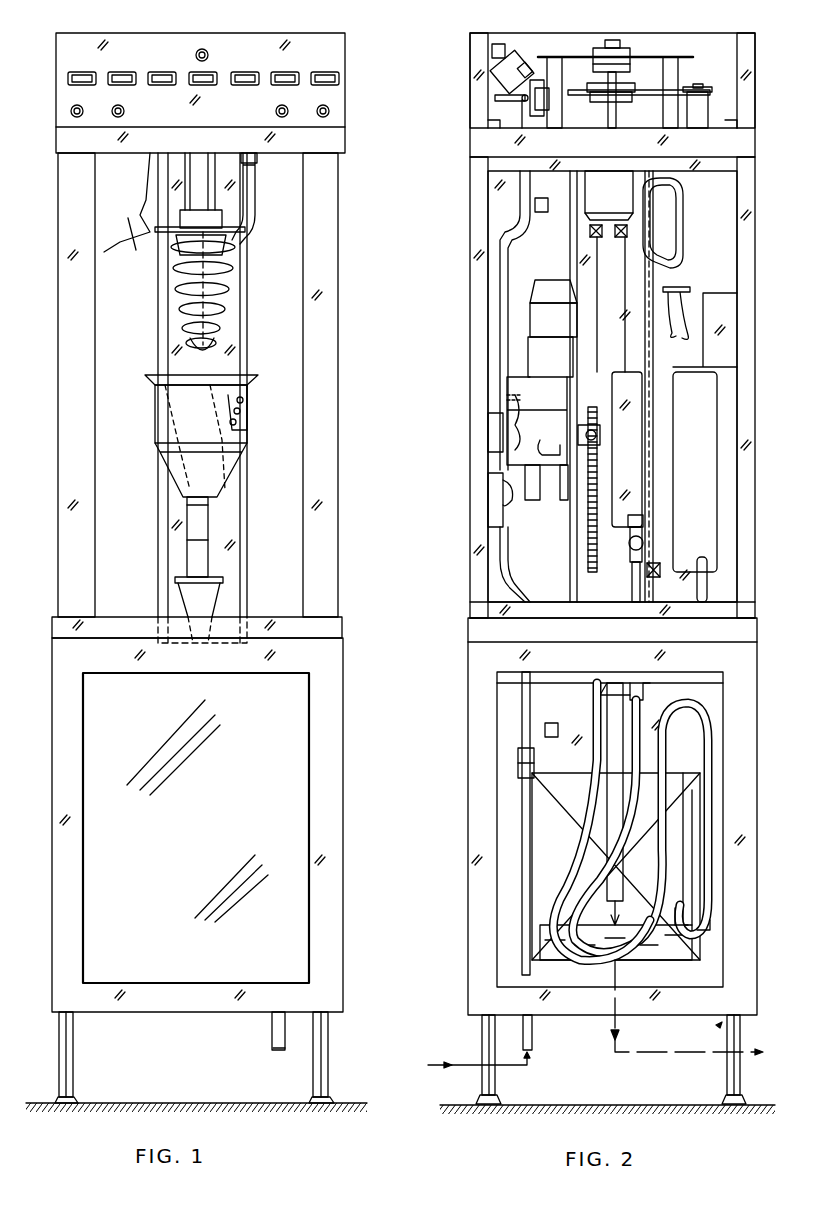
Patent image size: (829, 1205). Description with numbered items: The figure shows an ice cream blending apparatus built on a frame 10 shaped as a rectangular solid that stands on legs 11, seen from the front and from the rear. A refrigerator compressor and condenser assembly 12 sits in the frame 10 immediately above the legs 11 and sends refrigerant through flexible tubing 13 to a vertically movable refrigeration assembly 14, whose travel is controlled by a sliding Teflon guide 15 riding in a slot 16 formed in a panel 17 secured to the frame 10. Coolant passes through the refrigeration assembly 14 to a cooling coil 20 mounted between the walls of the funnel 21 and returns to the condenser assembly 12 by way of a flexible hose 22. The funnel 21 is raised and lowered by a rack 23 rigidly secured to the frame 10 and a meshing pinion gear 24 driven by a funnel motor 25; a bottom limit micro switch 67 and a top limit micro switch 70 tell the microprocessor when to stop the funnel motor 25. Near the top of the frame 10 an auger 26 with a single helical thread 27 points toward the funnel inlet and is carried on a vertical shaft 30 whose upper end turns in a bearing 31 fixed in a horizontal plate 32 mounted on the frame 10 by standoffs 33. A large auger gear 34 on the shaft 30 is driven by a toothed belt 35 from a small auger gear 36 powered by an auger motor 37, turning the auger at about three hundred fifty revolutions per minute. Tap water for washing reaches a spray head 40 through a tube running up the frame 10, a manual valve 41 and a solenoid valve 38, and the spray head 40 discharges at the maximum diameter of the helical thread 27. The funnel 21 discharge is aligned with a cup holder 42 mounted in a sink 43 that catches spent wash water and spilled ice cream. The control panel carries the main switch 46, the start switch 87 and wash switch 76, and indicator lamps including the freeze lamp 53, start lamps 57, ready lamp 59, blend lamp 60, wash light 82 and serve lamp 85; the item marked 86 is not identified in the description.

In FIG. 1, the frame 10 is at (322, 372).
In FIG. 1, the legs 11 is at (328, 1052).
In FIG. 2, the legs 11 is at (730, 1068).
In FIG. 1, the refrigerator compressor and condenser assembly 12 is at (276, 838).
In FIG. 2, the refrigerator compressor and condenser assembly 12 is at (644, 797).
In FIG. 2, the flexible tubing 13 is at (640, 710).
In FIG. 2, the refrigeration assembly 14 is at (632, 382).
In FIG. 2, the sliding Teflon guide 15 is at (610, 267).
In FIG. 1, the slot 16 is at (213, 528).
In FIG. 1, the panel 17 is at (300, 262).
In FIG. 1, the cooling coil 20 is at (237, 422).
In FIG. 1, the funnel 21 is at (155, 418).
In FIG. 2, the flexible hose 22 is at (607, 706).
In FIG. 2, the rack 23 is at (597, 477).
In FIG. 2, the pinion gear 24 is at (600, 432).
In FIG. 2, the funnel motor 25 is at (540, 322).
In FIG. 1, the auger 26 is at (198, 318).
In FIG. 1, the helical thread 27 is at (195, 288).
In FIG. 2, the vertical shaft 30 is at (606, 112).
In FIG. 2, the bearing 31 is at (604, 48).
In FIG. 2, the plate 32 is at (578, 57).
In FIG. 2, the standoffs 33 is at (548, 108).
In FIG. 2, the large auger gear 34 is at (648, 90).
In FIG. 2, the toothed belt 35 is at (680, 84).
In FIG. 2, the small auger gear 36 is at (704, 95).
In FIG. 2, the auger motor 37 is at (716, 233).
In FIG. 2, the solenoid valve 38 is at (495, 497).
In FIG. 1, the spray head 40 is at (256, 78).
In FIG. 2, the manual valve 41 is at (493, 425).
In FIG. 1, the cup holder 42 is at (212, 600).
In FIG. 1, the sink 43 is at (222, 645).
In FIG. 1, the main switch 46 is at (207, 50).
In FIG. 1, the freeze lamp 53 is at (122, 75).
In FIG. 1, the start lamps 57 is at (82, 72).
In FIG. 1, the ready lamp 59 is at (247, 75).
In FIG. 1, the blend lamp 60 is at (164, 75).
In FIG. 2, the bottom limit micro switch 67 is at (658, 563).
In FIG. 2, the top limit micro switch 70 is at (590, 231).
In FIG. 1, the wash switch 76 is at (330, 109).
In FIG. 1, the wash light 82 is at (287, 75).
In FIG. 1, the serve lamp 85 is at (205, 86).
In FIG. 1, the power cord 86 is at (127, 214).
In FIG. 1, the start switch 87 is at (80, 106).